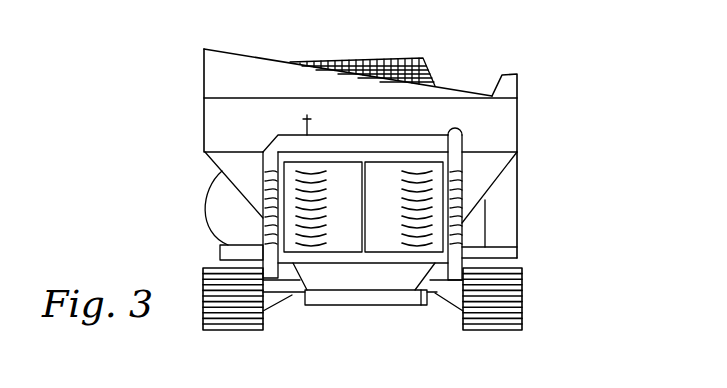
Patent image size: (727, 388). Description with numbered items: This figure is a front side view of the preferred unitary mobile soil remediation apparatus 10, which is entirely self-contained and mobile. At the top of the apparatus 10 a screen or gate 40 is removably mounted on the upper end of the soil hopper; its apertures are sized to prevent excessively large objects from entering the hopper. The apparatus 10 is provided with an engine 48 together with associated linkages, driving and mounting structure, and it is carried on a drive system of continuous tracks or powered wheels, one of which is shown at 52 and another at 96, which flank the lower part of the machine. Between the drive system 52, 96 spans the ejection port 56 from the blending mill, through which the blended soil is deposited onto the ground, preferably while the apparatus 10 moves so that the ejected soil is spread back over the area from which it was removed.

The unitary mobile soil remediation apparatus 10 is at (521, 57).
The screen or gate 40 is at (397, 60).
The engine 48 is at (403, 137).
The drive system 52 is at (220, 328).
The ejection port 56 is at (367, 298).
The right wheel 96 is at (522, 295).